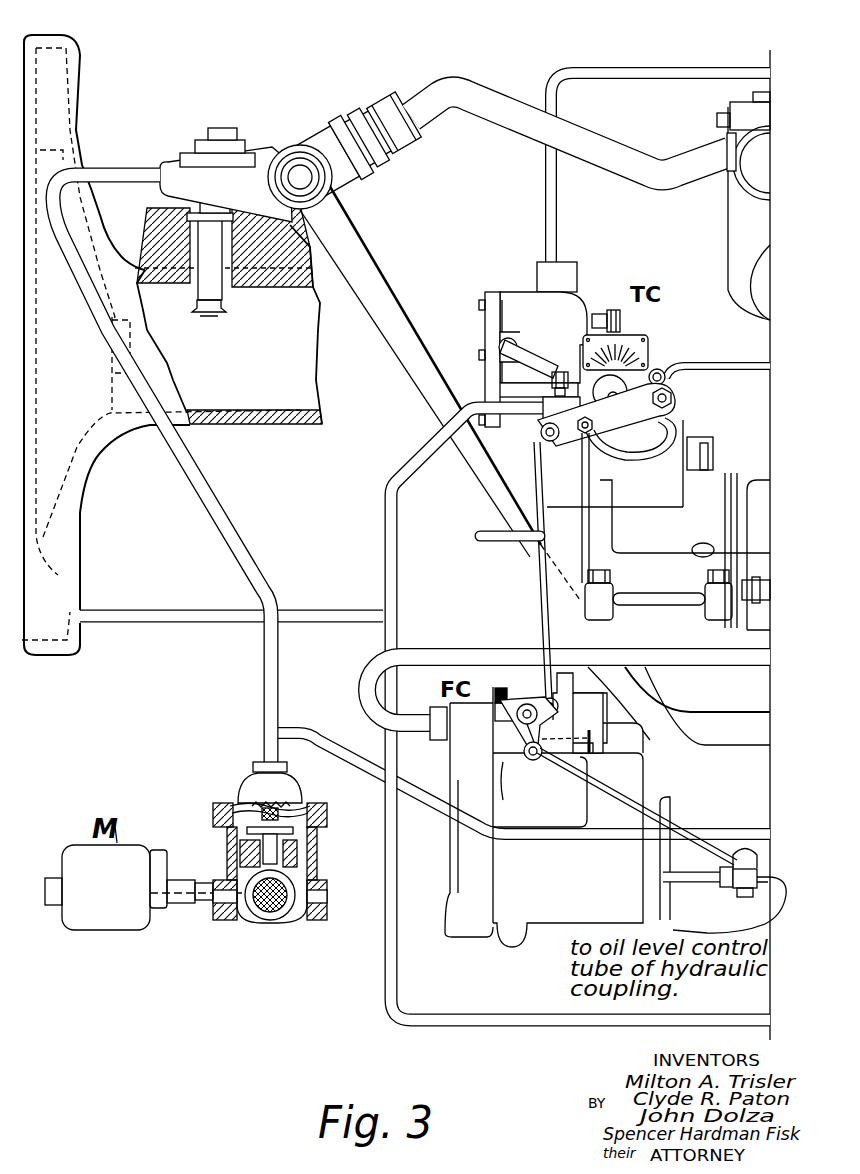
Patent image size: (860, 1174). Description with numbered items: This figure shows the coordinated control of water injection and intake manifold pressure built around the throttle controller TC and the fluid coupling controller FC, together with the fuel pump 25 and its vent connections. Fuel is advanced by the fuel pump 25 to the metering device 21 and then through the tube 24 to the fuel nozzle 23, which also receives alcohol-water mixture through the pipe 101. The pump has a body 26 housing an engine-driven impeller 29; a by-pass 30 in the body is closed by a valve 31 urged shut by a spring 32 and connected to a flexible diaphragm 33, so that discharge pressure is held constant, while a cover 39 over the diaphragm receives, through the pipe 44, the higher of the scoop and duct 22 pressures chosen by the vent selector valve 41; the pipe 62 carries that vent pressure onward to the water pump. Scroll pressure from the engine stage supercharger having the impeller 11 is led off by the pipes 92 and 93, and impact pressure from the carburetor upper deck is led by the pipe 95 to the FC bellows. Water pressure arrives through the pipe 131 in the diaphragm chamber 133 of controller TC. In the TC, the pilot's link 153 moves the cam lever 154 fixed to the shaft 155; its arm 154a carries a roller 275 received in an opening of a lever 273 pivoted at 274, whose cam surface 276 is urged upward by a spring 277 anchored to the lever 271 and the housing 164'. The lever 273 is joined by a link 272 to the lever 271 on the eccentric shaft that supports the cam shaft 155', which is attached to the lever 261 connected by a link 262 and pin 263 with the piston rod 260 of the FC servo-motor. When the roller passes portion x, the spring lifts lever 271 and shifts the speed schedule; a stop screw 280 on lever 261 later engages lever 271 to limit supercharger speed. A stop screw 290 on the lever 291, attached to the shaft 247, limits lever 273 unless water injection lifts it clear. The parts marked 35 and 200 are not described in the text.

The impeller 11 is at (76, 557).
The metering device 21 is at (727, 228).
The duct 22 is at (320, 360).
The fuel nozzle 23 is at (218, 256).
The tube 24 is at (621, 150).
The fuel pump 25 is at (251, 850).
The body 26 is at (228, 842).
The impeller 29 is at (270, 921).
The by-pass 30 is at (319, 862).
The valve 31 is at (247, 830).
The spring 32 is at (240, 803).
The flexible diaphragm 33 is at (297, 796).
The nut 35 is at (214, 313).
The cover 39 is at (288, 770).
The valve 41 is at (227, 128).
The pipe 44 is at (246, 544).
The pipe 62 is at (730, 832).
The pipe 92 is at (517, 1011).
The pipe 93 is at (191, 611).
The pipe 95 is at (457, 638).
The pipe 101 is at (357, 232).
The pipe 131 is at (644, 68).
The diaphragm chamber 133 is at (579, 306).
The link 153 is at (741, 354).
The cam lever 154 is at (637, 386).
The arm 154a is at (564, 410).
The shaft 155 is at (618, 416).
The cam shaft 155' is at (497, 725).
The housing 164' is at (632, 735).
The rod 200 is at (477, 538).
The shaft 247 is at (498, 346).
The piston rod 260 is at (703, 885).
The lever 261 is at (524, 740).
The link 262 is at (580, 777).
The pin 263 is at (745, 897).
The lever 271 is at (522, 733).
The link 272 is at (541, 630).
The lever 273 is at (673, 420).
The pivot 274 is at (675, 393).
The roller 275 is at (582, 438).
The cam surface 276 is at (640, 450).
The spring 277 is at (560, 734).
The stop screw 280 is at (498, 708).
The stop screw 290 is at (558, 367).
The lever 291 is at (522, 340).